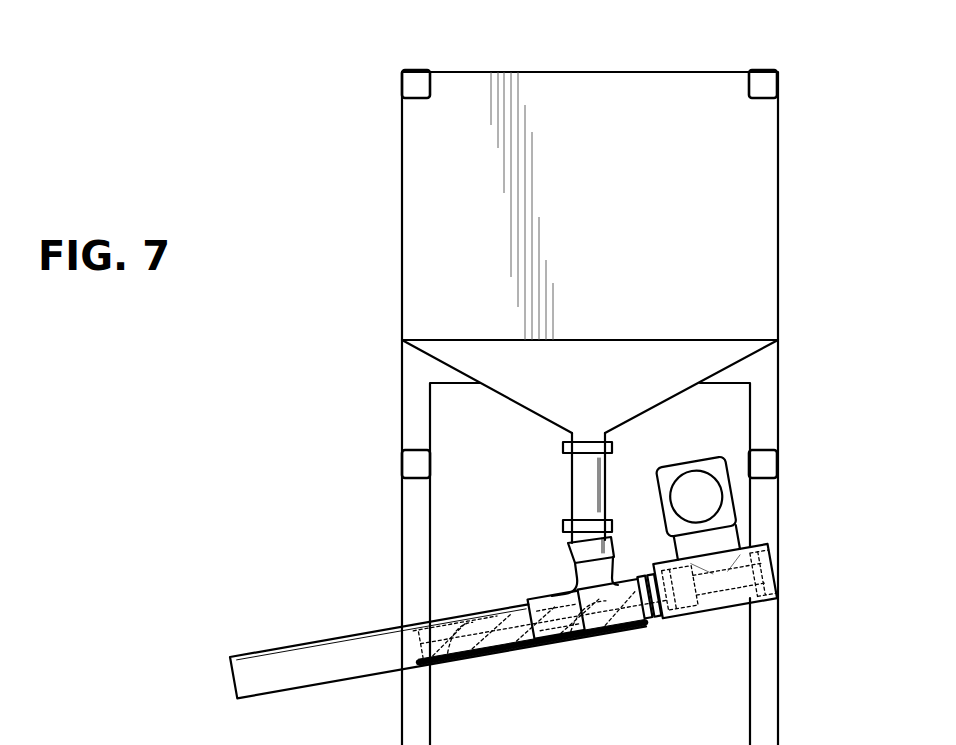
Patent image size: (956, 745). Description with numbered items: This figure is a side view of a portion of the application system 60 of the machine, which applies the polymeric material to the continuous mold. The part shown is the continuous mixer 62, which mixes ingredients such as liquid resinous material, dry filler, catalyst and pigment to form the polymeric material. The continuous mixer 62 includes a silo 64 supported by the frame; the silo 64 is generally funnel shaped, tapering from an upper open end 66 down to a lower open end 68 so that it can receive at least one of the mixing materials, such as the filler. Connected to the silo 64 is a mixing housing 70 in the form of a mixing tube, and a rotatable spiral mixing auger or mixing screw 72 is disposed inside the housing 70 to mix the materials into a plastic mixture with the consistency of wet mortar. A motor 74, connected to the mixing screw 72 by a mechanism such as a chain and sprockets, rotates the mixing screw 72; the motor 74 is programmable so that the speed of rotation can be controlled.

The application system 60 is at (786, 196).
The continuous mixer 62 is at (575, 652).
The silo 64 is at (778, 258).
The upper open end 66 is at (737, 72).
The lower open end 68 is at (608, 442).
The mixing housing 70 is at (505, 603).
The mixing screw 72 is at (462, 665).
The motor 74 is at (722, 487).